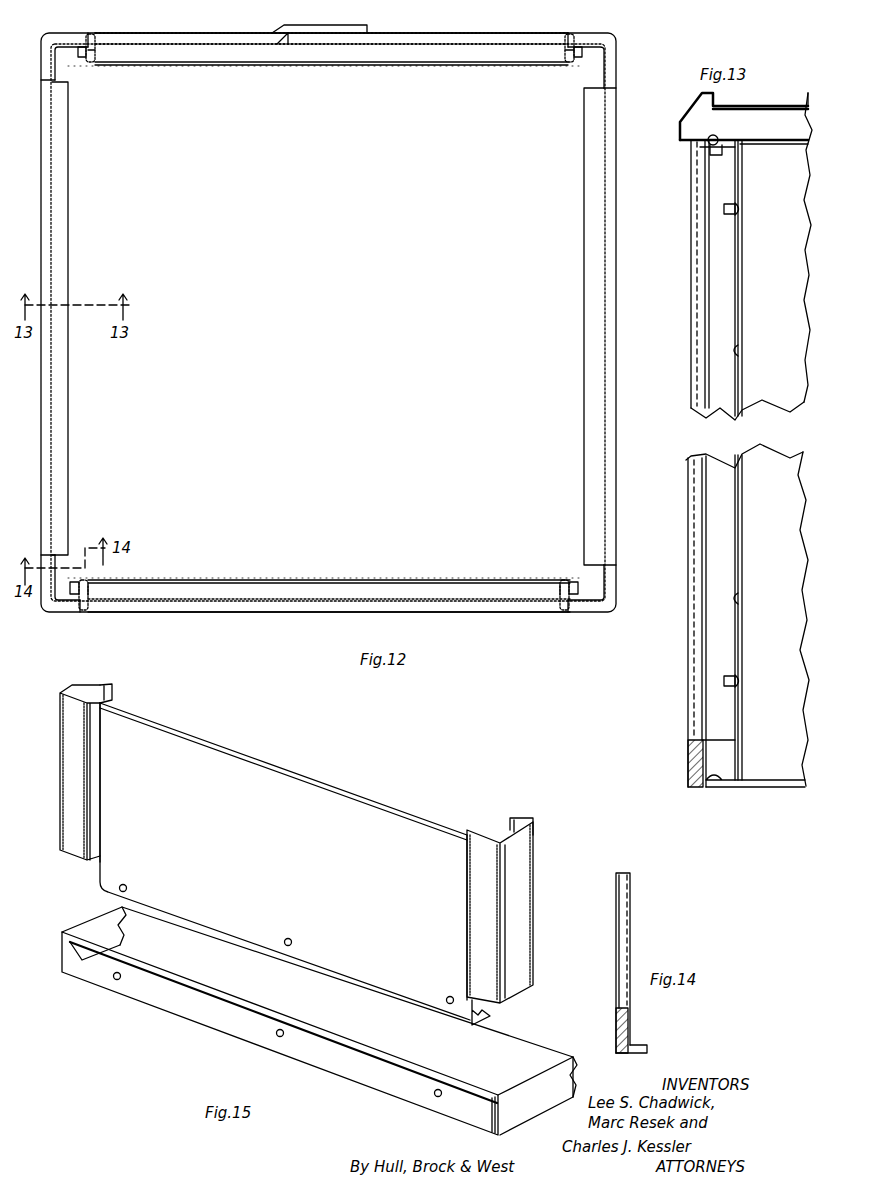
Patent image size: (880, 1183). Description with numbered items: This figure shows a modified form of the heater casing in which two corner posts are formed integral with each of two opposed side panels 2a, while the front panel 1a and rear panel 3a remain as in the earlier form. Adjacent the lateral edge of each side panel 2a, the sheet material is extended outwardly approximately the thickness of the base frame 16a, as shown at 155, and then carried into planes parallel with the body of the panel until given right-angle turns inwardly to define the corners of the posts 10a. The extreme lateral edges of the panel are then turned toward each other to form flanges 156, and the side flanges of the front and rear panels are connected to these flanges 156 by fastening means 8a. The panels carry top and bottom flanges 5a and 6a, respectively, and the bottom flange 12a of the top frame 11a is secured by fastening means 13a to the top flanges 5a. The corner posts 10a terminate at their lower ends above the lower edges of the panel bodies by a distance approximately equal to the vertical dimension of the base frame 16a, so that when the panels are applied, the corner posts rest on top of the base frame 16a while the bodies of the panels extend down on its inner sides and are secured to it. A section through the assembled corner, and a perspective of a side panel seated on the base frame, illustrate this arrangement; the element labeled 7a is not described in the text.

In FIG. 12, the front panel 1a is at (350, 581).
In FIG. 12, the side panel 2a is at (54, 408).
In FIG. 13, the side panel 2a is at (706, 320).
In FIG. 14, the side panel 2a is at (632, 903).
In FIG. 15, the side panel 2a is at (302, 768).
In FIG. 12, the rear panel 3a is at (245, 46).
In FIG. 13, the rear panel 3a is at (771, 387).
In FIG. 13, the top flange 5a is at (718, 150).
In FIG. 12, the bottom flange 6a is at (420, 66).
In FIG. 13, the bottom flange 6a is at (720, 788).
In FIG. 14, the bottom flange 6a is at (642, 1046).
In FIG. 15, the bottom flange 6a is at (488, 1022).
In FIG. 12, the clip edge 7a is at (96, 60).
In FIG. 13, the clip edge 7a is at (744, 292).
In FIG. 12, the fastening means 8a is at (80, 58).
In FIG. 13, the fastening means 8a is at (748, 214).
In FIG. 12, the corner post 10a is at (62, 37).
In FIG. 13, the corner post 10a is at (688, 508).
In FIG. 14, the corner post 10a is at (616, 940).
In FIG. 15, the corner post 10a is at (70, 780).
In FIG. 13, the top frame 11a is at (688, 110).
In FIG. 13, the bottom flange of top frame 12a is at (775, 140).
In FIG. 13, the fastening means 13a is at (716, 145).
In FIG. 12, the base frame 16a is at (432, 40).
In FIG. 13, the base frame 16a is at (687, 766).
In FIG. 14, the base frame 16a is at (616, 1022).
In FIG. 15, the base frame 16a is at (195, 1012).
In FIG. 12, the outward extension 155 is at (70, 96).
In FIG. 13, the outward extension 155 is at (700, 383).
In FIG. 15, the outward extension 155 is at (100, 796).
In FIG. 12, the flange 156 is at (95, 35).
In FIG. 13, the flange 156 is at (742, 350).
In FIG. 15, the flange 156 is at (110, 690).